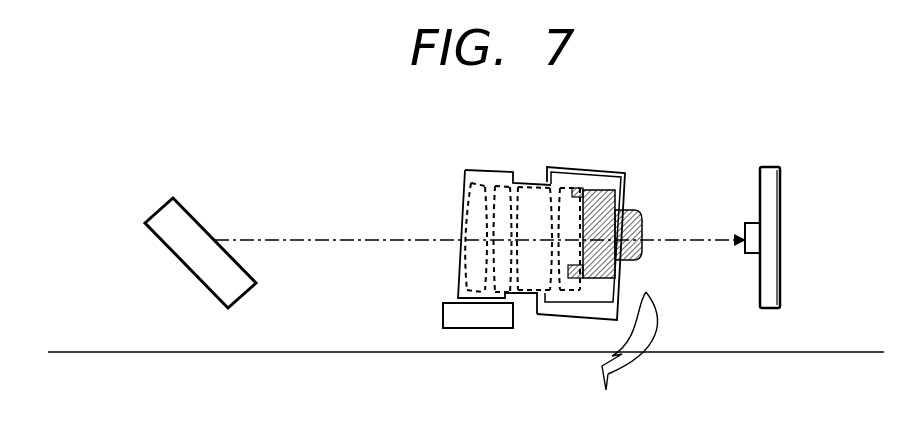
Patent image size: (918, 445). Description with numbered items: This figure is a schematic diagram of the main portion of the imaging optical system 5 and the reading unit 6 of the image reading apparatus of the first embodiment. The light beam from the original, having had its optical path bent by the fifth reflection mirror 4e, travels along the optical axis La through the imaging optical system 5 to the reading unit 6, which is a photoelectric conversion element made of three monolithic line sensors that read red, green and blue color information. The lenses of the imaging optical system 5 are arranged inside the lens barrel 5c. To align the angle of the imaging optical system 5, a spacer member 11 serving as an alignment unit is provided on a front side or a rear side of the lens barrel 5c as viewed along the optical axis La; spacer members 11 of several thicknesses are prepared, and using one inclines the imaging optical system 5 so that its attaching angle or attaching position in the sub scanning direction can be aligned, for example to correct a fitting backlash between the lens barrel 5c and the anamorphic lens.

The optical axis La is at (342, 239).
The fifth reflection mirror 4e is at (177, 249).
The imaging optical system 5 is at (502, 170).
The lens barrel 5c is at (556, 310).
The reading unit 6 is at (773, 166).
The spacer member 11 is at (443, 314).